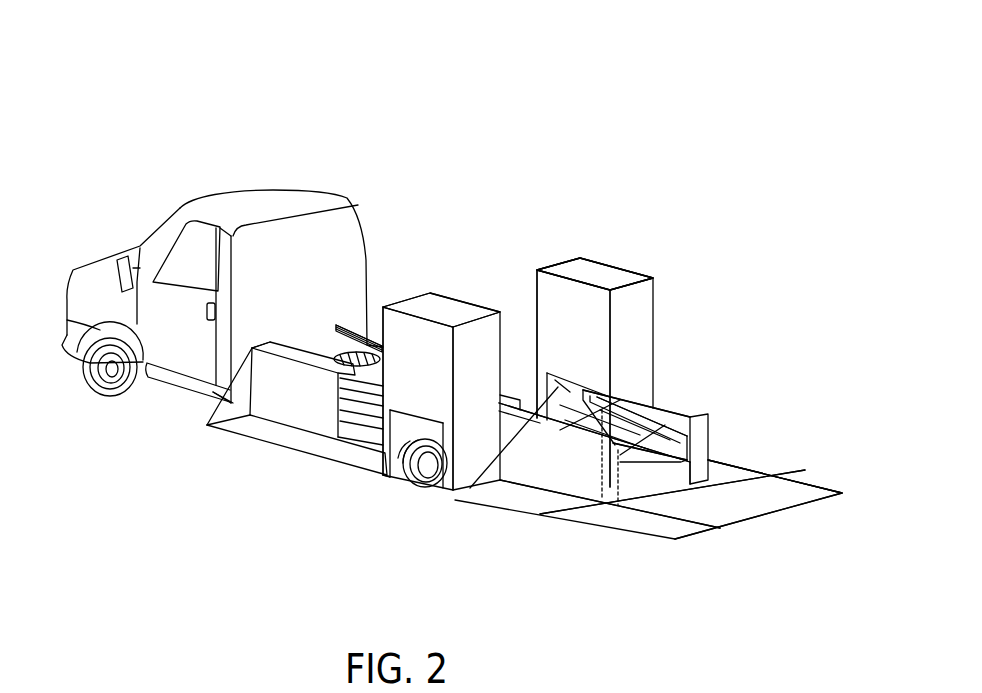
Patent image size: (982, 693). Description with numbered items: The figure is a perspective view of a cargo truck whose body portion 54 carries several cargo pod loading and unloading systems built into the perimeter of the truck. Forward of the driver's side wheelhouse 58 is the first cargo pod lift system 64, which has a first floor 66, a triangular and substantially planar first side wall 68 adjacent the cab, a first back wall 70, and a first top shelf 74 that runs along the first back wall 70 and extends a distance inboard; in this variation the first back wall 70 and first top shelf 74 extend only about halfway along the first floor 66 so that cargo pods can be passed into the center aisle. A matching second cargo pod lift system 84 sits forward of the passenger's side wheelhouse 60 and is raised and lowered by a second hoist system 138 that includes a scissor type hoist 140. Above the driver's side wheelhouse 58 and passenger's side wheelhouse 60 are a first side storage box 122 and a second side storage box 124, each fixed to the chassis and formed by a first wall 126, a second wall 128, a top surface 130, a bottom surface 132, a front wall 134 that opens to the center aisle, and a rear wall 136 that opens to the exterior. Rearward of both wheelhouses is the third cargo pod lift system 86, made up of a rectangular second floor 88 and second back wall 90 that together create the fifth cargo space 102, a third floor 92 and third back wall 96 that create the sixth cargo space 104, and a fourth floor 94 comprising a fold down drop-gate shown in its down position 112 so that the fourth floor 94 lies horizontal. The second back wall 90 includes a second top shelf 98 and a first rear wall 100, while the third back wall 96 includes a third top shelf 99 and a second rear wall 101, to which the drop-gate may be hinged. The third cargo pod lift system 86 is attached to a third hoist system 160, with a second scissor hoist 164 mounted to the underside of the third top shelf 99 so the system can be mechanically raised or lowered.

The body portion 54 is at (460, 178).
The driver's side wheelhouse 58 is at (393, 443).
The passenger's side wheelhouse 60 is at (480, 485).
The first cargo pod lift system 64 is at (213, 432).
The first floor 66 is at (253, 428).
The first side wall 68 is at (210, 402).
The first back wall 70 is at (275, 400).
The first top shelf 74 is at (277, 345).
The second cargo pod lift system 84 is at (355, 322).
The third cargo pod lift system 86 is at (523, 517).
The second floor 88 is at (506, 490).
The second back wall 90 is at (563, 470).
The third floor 92 is at (723, 468).
The fourth floor 94 is at (737, 505).
The third back wall 96 is at (697, 414).
The second top shelf 98 is at (697, 460).
The third top shelf 99 is at (658, 404).
The first rear wall 100 is at (612, 492).
The second rear wall 101 is at (742, 512).
The fifth cargo space 102 is at (542, 467).
The sixth cargo space 104 is at (727, 425).
The down position 112 is at (797, 480).
The first side storage box 122 is at (405, 290).
The second side storage box 124 is at (553, 263).
The first wall 126 is at (380, 290).
The second wall 128 is at (478, 330).
The top surface 130 is at (435, 308).
The bottom surface 132 is at (420, 500).
The front wall 134 is at (540, 325).
The rear wall 136 is at (390, 378).
The second hoist system 138 is at (336, 326).
The scissor type hoist 140 is at (335, 357).
The third hoist system 160 is at (643, 407).
The second scissor hoist 164 is at (678, 412).